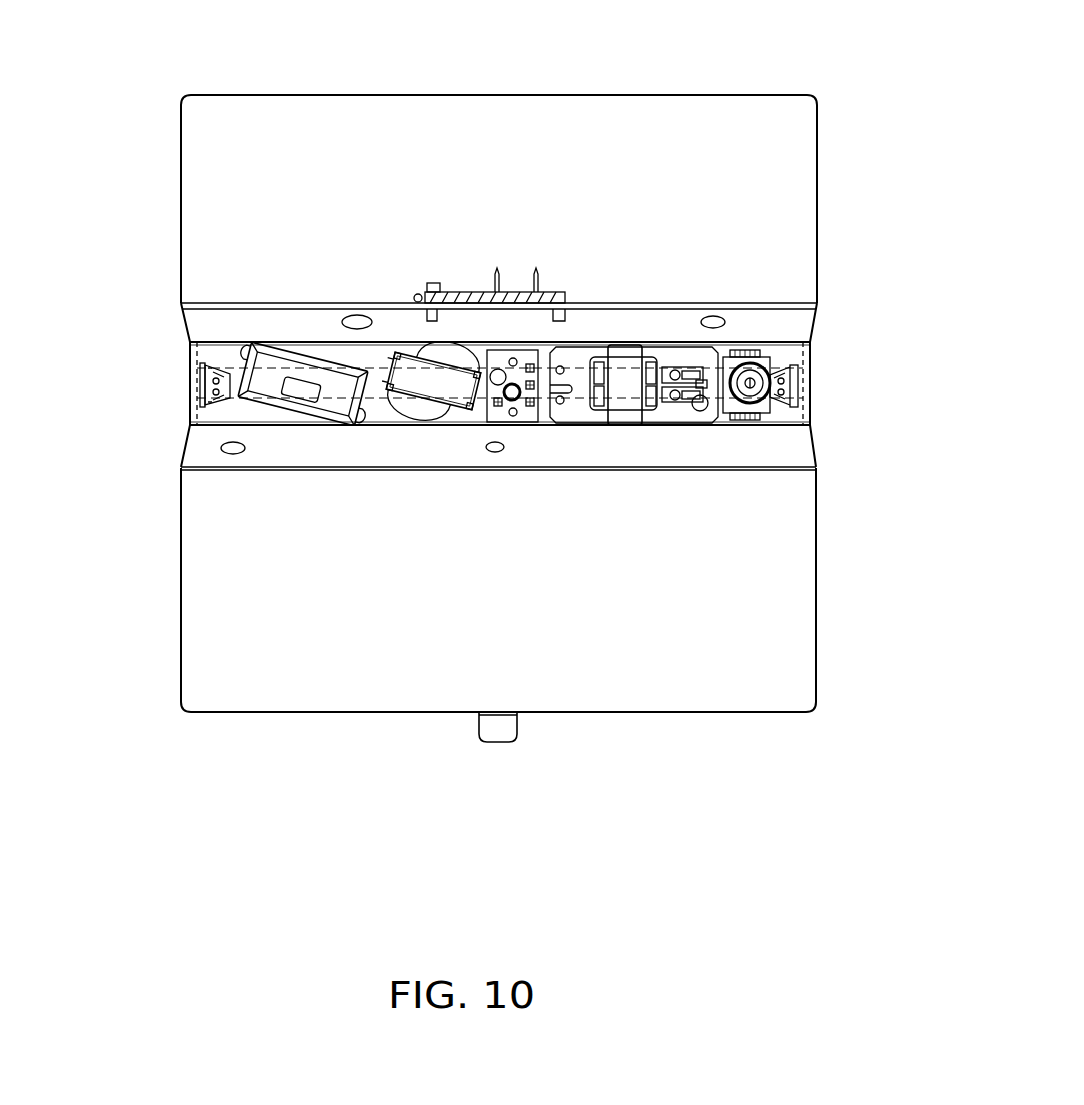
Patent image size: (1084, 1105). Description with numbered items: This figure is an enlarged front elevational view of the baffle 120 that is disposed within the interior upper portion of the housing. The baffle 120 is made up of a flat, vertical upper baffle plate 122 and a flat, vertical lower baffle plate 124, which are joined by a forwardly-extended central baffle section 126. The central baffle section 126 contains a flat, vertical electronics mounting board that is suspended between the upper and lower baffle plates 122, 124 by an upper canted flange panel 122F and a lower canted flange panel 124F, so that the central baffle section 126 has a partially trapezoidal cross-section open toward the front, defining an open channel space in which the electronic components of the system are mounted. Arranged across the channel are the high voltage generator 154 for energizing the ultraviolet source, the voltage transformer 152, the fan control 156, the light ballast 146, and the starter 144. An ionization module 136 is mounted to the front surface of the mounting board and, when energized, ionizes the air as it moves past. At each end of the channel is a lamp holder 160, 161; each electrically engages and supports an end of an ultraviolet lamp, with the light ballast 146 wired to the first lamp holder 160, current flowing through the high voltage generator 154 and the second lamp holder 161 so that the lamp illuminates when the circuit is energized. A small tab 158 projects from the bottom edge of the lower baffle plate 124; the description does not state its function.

The baffle 120 is at (295, 57).
The upper baffle plate 122 is at (283, 152).
The upper canted flange panel 122F is at (767, 322).
The lower baffle plate 124 is at (213, 580).
The lower canted flange panel 124F is at (767, 443).
The central baffle section 126 is at (180, 365).
The ionization module 136 is at (437, 282).
The starter 144 is at (795, 378).
The light ballast 146 is at (680, 417).
The voltage transformer 152 is at (393, 357).
The high voltage generator 154 is at (270, 387).
The fan control 156 is at (493, 353).
The mounting tab 158 is at (500, 730).
The lamp holder 160 is at (787, 367).
The second lamp holder 161 is at (203, 385).